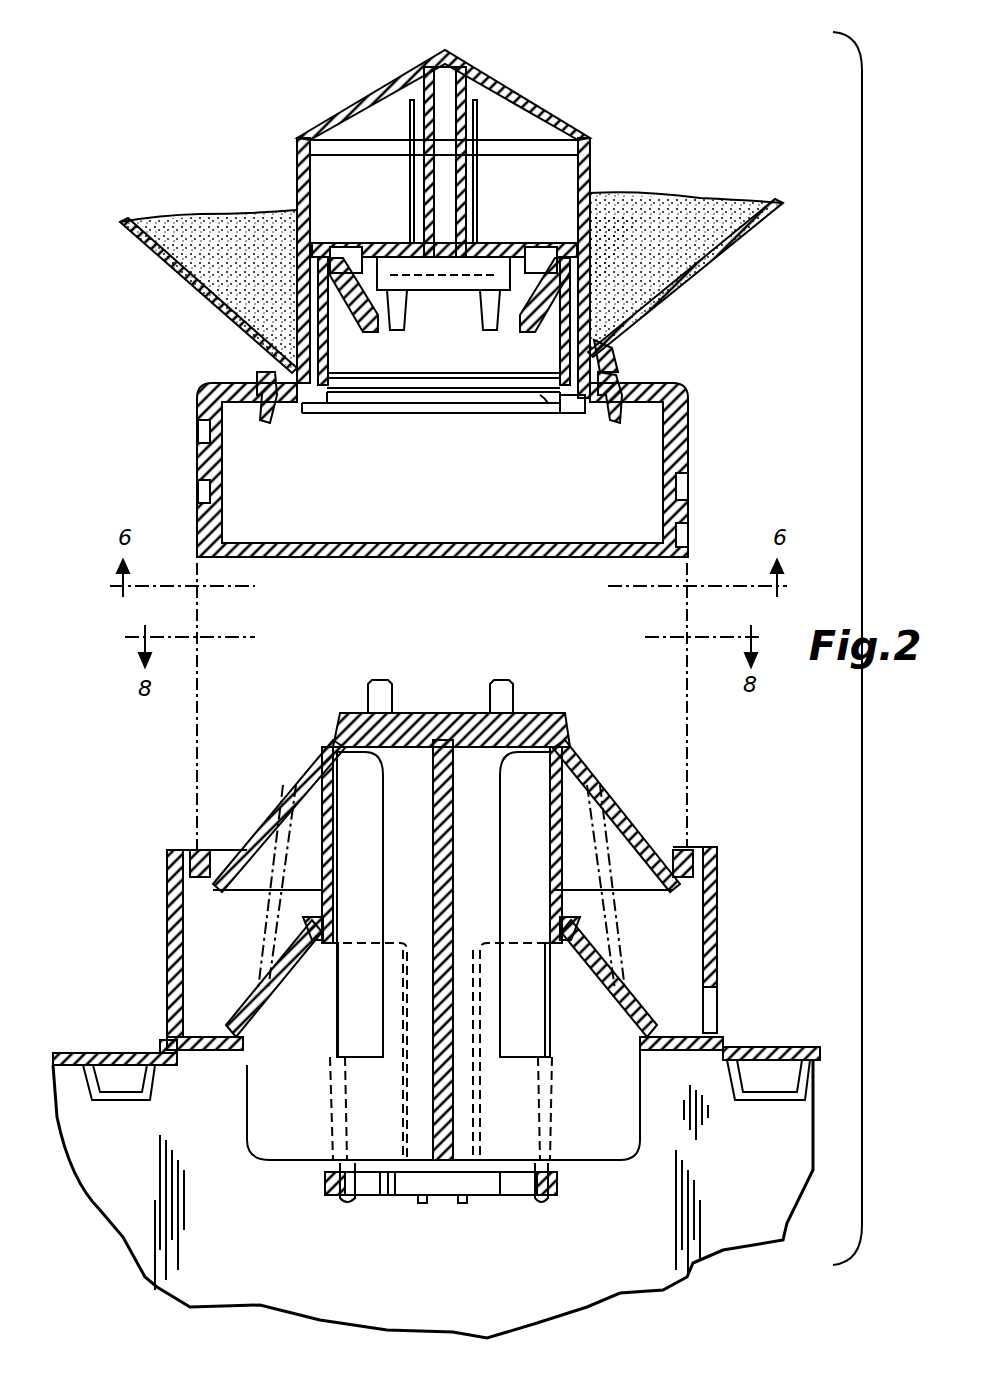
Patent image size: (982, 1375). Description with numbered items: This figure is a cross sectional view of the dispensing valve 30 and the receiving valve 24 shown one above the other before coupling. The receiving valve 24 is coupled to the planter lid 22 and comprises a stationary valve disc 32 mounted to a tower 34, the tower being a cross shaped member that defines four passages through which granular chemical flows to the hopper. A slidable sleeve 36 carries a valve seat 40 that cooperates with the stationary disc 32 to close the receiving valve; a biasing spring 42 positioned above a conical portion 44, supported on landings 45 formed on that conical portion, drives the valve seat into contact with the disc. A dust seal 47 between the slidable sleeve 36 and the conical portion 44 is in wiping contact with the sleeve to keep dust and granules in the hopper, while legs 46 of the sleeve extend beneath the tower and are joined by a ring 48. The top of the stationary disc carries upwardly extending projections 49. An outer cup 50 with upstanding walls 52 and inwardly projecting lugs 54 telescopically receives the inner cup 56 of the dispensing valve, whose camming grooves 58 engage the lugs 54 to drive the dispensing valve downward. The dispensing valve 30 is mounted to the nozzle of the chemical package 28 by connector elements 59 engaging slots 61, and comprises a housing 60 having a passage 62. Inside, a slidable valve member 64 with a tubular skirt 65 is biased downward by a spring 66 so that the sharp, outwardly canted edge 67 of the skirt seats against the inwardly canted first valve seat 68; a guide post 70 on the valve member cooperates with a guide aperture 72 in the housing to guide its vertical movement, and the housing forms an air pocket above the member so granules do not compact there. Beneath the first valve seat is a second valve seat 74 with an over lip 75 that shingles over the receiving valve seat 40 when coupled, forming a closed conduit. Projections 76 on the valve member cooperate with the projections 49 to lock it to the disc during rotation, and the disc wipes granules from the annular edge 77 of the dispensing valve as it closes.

The planter lid 22 is at (62, 1052).
The receiving valve 24 is at (482, 950).
The chemical package 28 is at (736, 252).
The dispensing valve 30 is at (456, 279).
The stationary valve disc 32 is at (536, 712).
The tower 34 is at (395, 815).
The slidable sleeve 36 is at (453, 904).
The valve seat 40 is at (335, 740).
The biasing spring 42 is at (622, 945).
The conical portion 44 is at (635, 995).
The landings 45 is at (259, 970).
The legs 46 is at (540, 1204).
The dust seal 47 is at (300, 934).
The ring 48 is at (557, 1185).
The projections 49 is at (496, 682).
The outer cup 50 is at (482, 916).
The upstanding walls 52 is at (718, 928).
The lugs 54 is at (681, 850).
The inner cup 56 is at (486, 470).
The camming grooves 58 is at (690, 484).
The connector elements 59 is at (616, 365).
The housing 60 is at (589, 140).
The slots 61 is at (600, 405).
The passage 62 is at (605, 272).
The slidable valve member 64 is at (375, 243).
The tubular skirt 65 is at (328, 348).
The spring 66 is at (478, 222).
The edge 67 is at (337, 392).
The first valve seat 68 is at (537, 390).
The guide post 70 is at (478, 160).
The guide aperture 72 is at (470, 62).
The second valve seat 74 is at (317, 413).
The over lip 75 is at (560, 398).
The projections 76 is at (475, 312).
The annular edge 77 is at (407, 395).